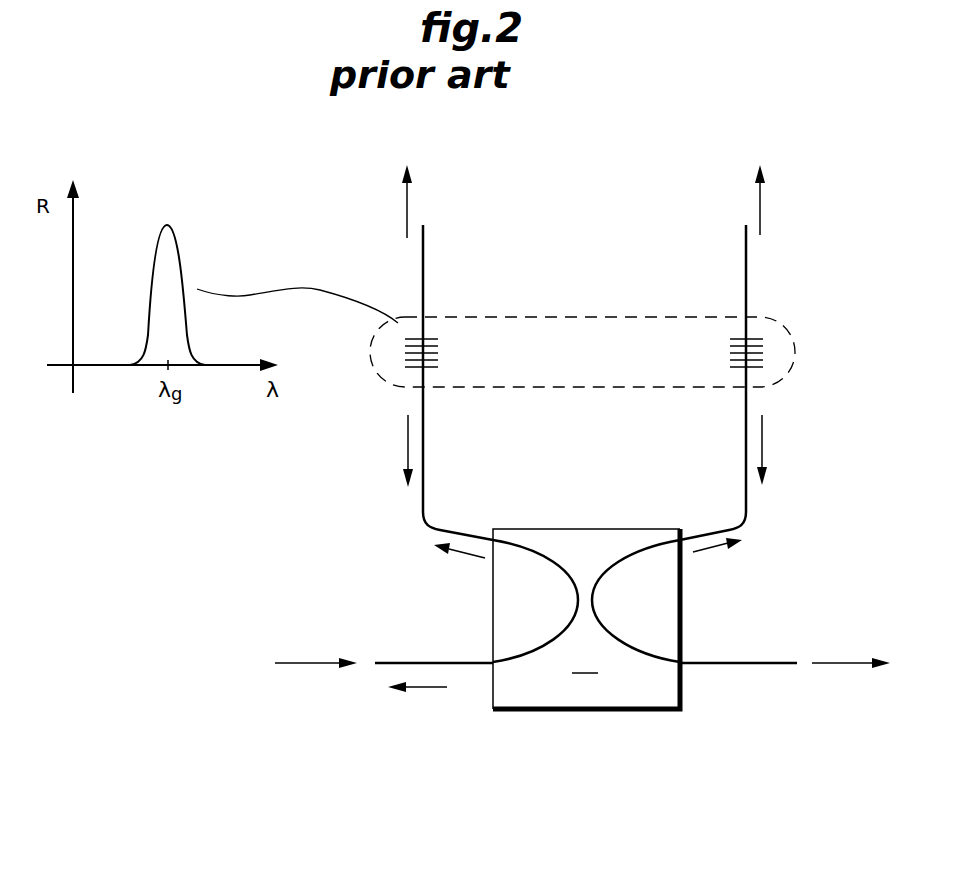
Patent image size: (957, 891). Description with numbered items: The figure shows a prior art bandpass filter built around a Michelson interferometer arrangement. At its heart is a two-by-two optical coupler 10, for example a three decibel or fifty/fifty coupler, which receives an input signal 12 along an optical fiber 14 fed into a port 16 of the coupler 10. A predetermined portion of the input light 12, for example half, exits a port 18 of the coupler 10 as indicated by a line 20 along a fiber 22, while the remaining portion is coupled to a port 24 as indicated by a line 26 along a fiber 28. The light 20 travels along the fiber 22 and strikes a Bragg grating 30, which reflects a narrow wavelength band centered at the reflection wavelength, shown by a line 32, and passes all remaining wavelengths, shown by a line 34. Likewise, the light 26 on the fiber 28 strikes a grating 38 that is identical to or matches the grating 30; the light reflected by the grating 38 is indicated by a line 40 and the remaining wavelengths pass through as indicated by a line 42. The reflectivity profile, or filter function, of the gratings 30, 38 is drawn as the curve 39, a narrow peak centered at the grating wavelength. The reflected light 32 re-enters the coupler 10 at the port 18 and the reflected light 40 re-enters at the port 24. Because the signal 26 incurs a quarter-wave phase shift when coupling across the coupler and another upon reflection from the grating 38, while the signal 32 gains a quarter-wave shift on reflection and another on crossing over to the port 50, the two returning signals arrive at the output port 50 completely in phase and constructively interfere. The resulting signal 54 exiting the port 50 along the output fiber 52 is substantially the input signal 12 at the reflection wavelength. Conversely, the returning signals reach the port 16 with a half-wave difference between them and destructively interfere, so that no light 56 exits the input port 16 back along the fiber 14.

The optical coupler 10 is at (586, 619).
The input signal 12 is at (302, 662).
The optical fiber 14 is at (422, 662).
The port 16 is at (490, 664).
The port 18 is at (485, 541).
The line 20 is at (468, 557).
The fiber 22 is at (424, 279).
The port 24 is at (688, 541).
The line 26 is at (708, 552).
The fiber 28 is at (746, 279).
The Bragg grating 30 is at (400, 352).
The line 32 is at (406, 443).
The line 34 is at (405, 207).
The grating 38 is at (765, 350).
The curve 39 is at (176, 233).
The line 40 is at (764, 447).
The line 42 is at (762, 205).
The output port 50 is at (683, 664).
The output fiber 52 is at (745, 662).
The signal 54 is at (831, 662).
The light 56 is at (430, 688).